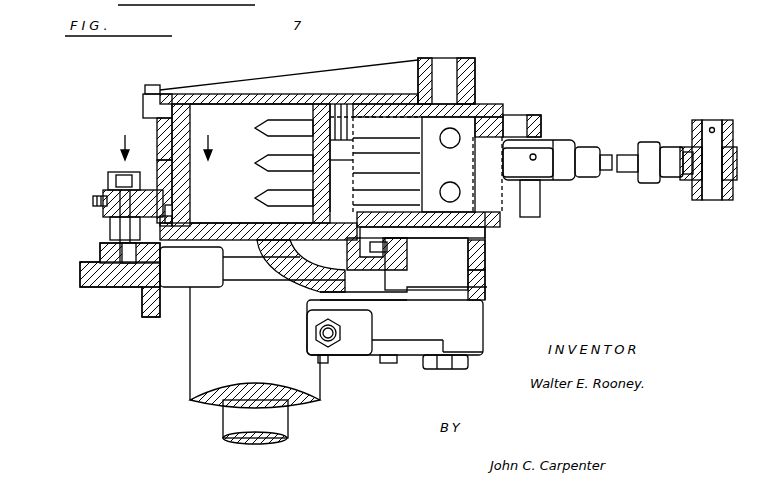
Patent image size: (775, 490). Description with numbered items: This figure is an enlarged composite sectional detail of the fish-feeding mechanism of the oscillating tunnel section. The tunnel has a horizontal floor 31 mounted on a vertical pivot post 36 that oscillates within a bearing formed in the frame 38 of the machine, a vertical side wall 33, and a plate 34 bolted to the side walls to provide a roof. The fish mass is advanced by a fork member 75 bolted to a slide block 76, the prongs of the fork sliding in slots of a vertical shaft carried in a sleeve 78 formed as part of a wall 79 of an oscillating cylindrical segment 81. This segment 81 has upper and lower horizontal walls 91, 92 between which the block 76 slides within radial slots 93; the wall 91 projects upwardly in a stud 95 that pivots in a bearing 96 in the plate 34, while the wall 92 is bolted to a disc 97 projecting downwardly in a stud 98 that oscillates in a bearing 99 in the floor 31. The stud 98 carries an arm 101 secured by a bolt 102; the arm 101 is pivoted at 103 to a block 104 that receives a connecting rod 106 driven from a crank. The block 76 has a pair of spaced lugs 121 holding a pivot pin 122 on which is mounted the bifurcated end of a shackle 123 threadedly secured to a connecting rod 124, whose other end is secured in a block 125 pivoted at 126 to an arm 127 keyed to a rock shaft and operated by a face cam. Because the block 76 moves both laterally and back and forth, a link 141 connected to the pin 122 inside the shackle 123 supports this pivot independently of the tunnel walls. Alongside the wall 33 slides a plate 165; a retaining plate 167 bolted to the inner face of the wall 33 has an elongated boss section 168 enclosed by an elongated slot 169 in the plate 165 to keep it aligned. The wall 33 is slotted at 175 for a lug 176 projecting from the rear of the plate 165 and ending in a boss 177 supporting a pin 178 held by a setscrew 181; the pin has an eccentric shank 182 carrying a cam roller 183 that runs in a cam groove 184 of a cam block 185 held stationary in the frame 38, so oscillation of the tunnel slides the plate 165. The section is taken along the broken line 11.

The section line 11 is at (164, 146).
The horizontal floor 31 is at (297, 240).
The vertical side wall 33 is at (150, 105).
The plate 34 is at (250, 94).
The vertical pivot post 36 is at (247, 432).
The frame 38 is at (106, 292).
The fork member 75 is at (284, 163).
The slide block 76 is at (517, 206).
The sleeve 78 is at (333, 110).
The wall 79 is at (316, 183).
The oscillating cylindrical segment 81 is at (388, 104).
The upper horizontal wall 91 is at (505, 118).
The lower horizontal wall 92 is at (492, 227).
The radial slots 93 is at (480, 108).
The stud 95 is at (445, 64).
The bearing 96 is at (470, 70).
The disc 97 is at (440, 240).
The stud 98 is at (472, 284).
The bearing 99 is at (485, 262).
The arm 101 is at (395, 327).
The bolt 102 is at (443, 369).
The pivot 103 is at (326, 363).
The block 104 is at (307, 318).
The connecting rod 106 is at (318, 336).
The spaced lugs 121 is at (540, 125).
The pivot pin 122 is at (534, 115).
The shackle 123 is at (560, 183).
The connecting rod 124 is at (622, 152).
The block 125 is at (736, 160).
The pivot 126 is at (714, 126).
The arm 127 is at (733, 192).
The link 141 is at (530, 155).
The sliding plate 165 is at (181, 108).
The retaining plate 167 is at (190, 212).
The elongated boss section 168 is at (190, 183).
The elongated slot 169 is at (186, 137).
The slot 175 is at (165, 228).
The lug 176 is at (190, 197).
The boss 177 is at (112, 188).
The pin 178 is at (122, 208).
The setscrew 181 is at (95, 200).
The eccentric shank 182 is at (98, 272).
The cam roller 183 is at (146, 290).
The cam groove 184 is at (100, 258).
The cam block 185 is at (112, 252).